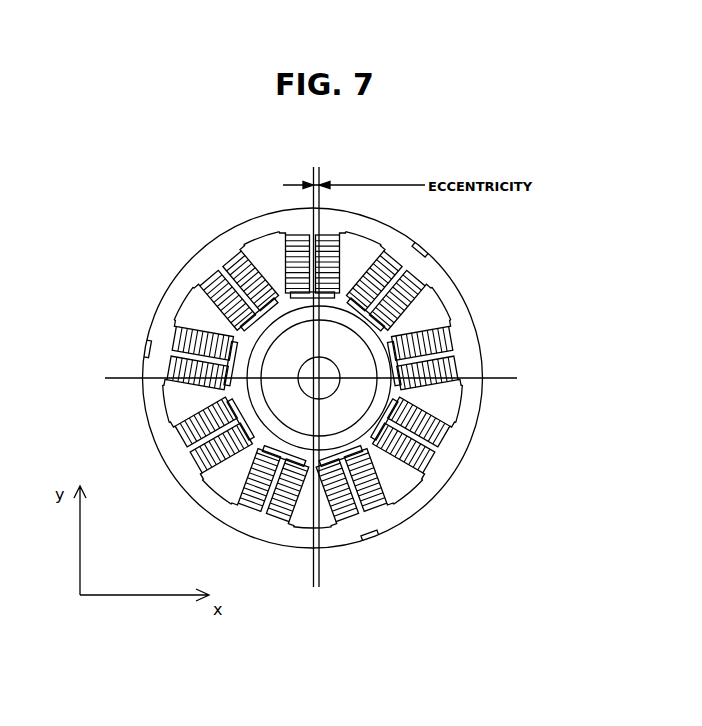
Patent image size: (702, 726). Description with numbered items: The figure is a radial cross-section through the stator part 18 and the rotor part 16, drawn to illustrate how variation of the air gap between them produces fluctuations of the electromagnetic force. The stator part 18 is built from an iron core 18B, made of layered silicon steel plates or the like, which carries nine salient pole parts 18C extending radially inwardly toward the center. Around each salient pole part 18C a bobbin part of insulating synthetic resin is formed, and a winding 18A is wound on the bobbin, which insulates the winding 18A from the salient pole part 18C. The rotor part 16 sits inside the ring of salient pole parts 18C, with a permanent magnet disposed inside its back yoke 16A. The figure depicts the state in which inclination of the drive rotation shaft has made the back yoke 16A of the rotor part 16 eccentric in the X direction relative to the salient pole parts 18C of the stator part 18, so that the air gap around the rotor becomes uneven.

The rotor part 16 is at (362, 393).
The back yoke 16A is at (356, 432).
The stator part 18 is at (463, 298).
The winding 18A is at (176, 290).
The iron core 18B is at (467, 350).
The salient pole part 18C is at (276, 249).